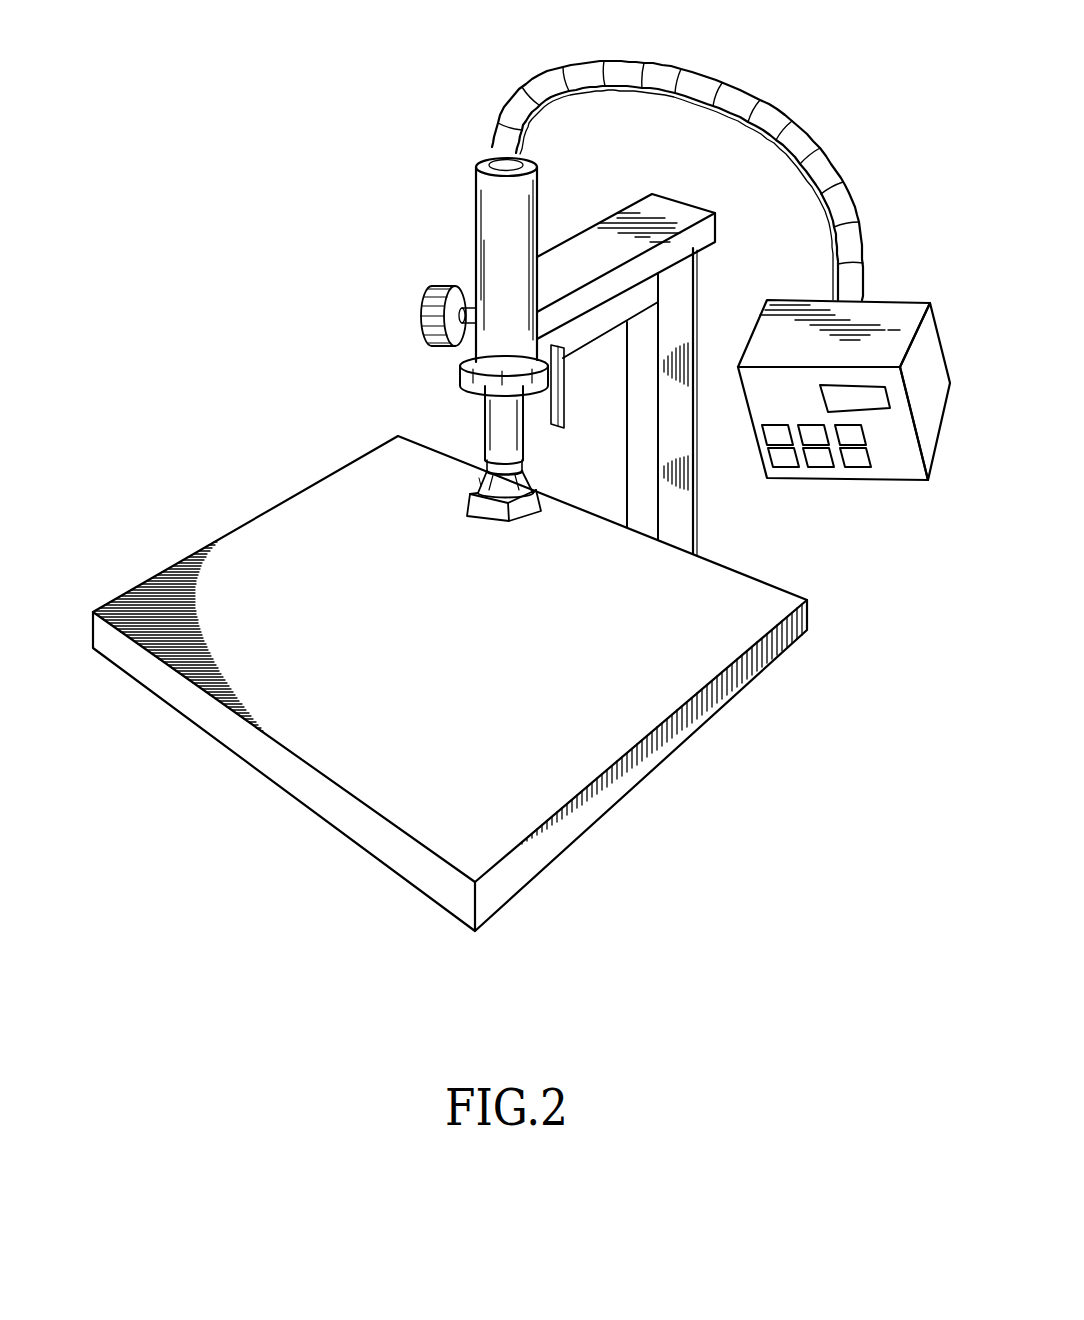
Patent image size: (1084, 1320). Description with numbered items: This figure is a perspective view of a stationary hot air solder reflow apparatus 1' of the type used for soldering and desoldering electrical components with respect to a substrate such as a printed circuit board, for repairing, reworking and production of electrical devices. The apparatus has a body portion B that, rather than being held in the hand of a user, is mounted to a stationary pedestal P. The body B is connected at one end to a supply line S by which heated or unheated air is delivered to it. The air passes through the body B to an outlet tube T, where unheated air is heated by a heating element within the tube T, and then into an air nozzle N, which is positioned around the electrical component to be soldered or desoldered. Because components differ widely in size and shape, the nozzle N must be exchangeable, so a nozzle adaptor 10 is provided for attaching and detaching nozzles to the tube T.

The stationary hot air solder reflow apparatus 1' is at (450, 517).
The body portion B is at (476, 245).
The outlet tube T is at (493, 423).
The air nozzle N is at (543, 494).
The nozzle adaptor 10 is at (468, 478).
The supply line S is at (683, 73).
The stationary pedestal P is at (698, 534).